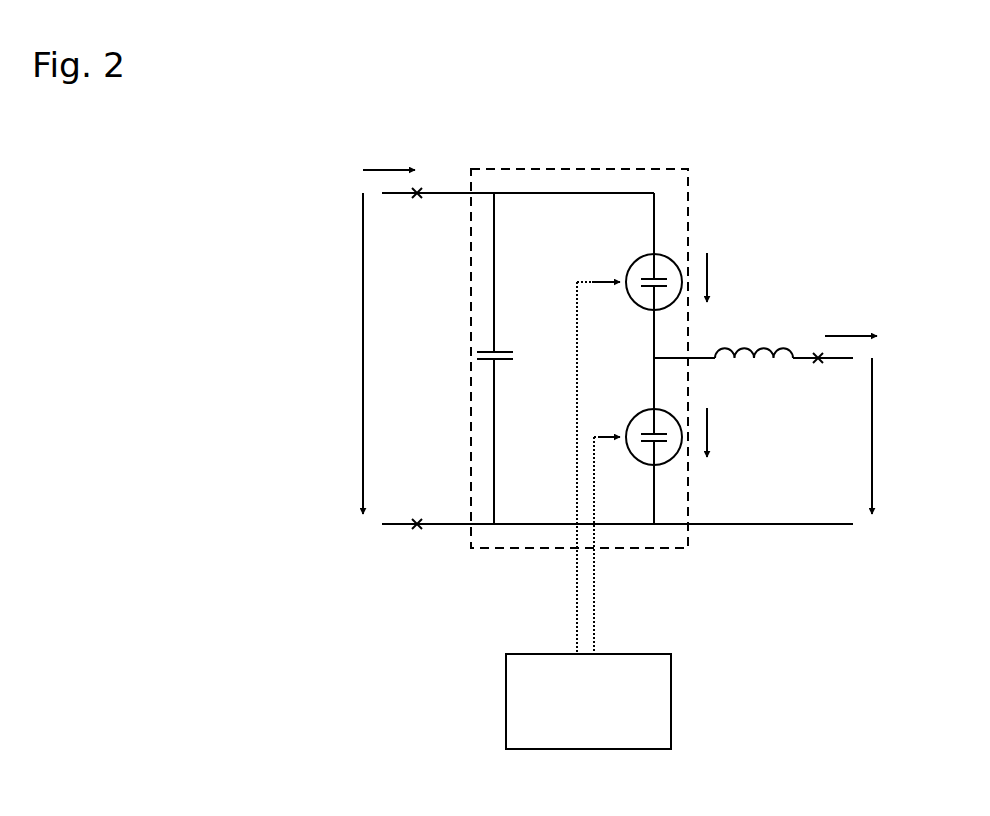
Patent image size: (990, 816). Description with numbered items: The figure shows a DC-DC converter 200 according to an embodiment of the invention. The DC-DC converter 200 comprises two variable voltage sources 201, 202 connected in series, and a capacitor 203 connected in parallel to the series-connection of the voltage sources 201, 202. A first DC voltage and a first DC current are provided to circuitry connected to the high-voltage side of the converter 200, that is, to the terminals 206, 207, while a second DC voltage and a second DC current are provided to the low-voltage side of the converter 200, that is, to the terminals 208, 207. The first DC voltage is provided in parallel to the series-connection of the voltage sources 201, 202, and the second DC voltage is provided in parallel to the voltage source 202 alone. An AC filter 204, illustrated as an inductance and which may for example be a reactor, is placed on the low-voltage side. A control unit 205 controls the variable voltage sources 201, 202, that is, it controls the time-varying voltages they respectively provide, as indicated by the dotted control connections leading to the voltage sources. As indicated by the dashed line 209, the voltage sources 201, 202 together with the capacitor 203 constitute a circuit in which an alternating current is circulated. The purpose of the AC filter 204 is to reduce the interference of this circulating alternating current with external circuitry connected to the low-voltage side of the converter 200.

The DC-DC converter 200 is at (336, 679).
The variable voltage source 201 is at (629, 264).
The variable voltage source 202 is at (635, 420).
The capacitor 203 is at (518, 358).
The AC filter 204 is at (754, 374).
The control unit 205 is at (588, 515).
The terminal 206 is at (418, 214).
The terminal 207 is at (418, 545).
The terminal 208 is at (819, 379).
The dashed line 209 is at (582, 338).